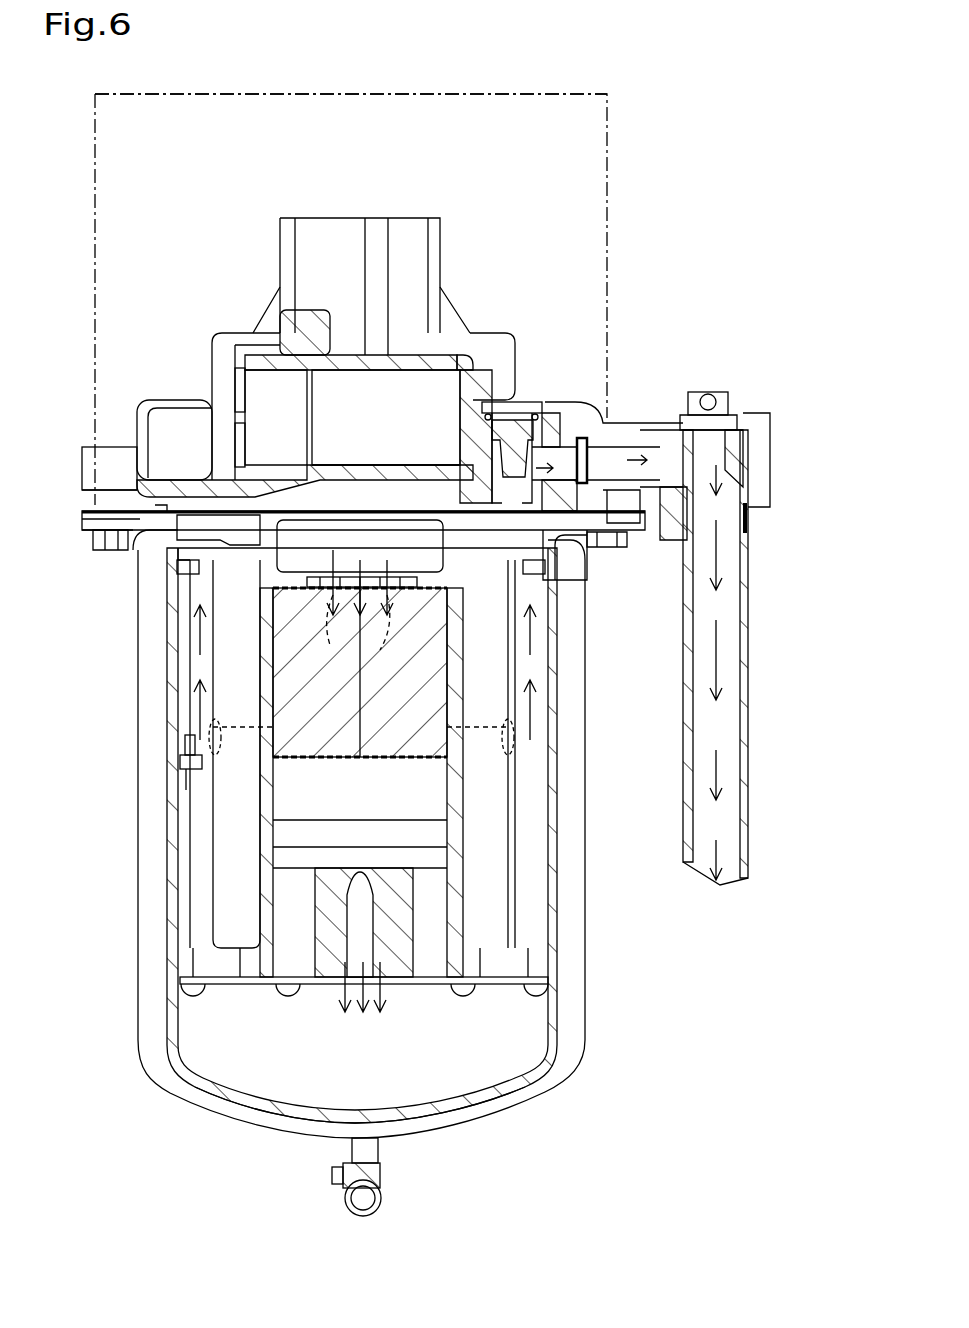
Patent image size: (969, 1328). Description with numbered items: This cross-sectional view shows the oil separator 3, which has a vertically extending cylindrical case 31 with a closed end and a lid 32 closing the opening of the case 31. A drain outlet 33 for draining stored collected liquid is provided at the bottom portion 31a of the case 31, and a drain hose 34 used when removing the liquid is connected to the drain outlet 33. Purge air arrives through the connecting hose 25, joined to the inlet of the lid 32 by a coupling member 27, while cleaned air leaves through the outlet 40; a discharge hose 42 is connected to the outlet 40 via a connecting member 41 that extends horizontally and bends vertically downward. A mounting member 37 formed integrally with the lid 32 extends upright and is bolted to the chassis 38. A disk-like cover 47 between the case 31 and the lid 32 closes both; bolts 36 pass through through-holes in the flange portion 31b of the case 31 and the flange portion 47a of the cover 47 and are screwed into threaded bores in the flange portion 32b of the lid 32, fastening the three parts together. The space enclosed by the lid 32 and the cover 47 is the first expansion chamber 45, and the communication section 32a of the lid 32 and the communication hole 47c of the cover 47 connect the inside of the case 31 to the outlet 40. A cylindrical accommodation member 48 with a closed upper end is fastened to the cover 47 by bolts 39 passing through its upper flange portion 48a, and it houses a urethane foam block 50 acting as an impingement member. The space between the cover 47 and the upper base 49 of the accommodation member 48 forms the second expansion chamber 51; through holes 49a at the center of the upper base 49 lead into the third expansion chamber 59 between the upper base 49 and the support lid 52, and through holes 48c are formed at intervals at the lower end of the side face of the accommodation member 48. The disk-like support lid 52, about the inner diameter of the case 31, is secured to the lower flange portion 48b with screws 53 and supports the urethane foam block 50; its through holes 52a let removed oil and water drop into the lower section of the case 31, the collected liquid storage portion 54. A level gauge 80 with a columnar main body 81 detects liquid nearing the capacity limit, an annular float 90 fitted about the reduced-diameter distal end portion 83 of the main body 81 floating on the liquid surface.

The oil separator 3 is at (632, 219).
The connecting hose 25 is at (745, 430).
The coupling member 27 is at (648, 420).
The case 31 is at (587, 967).
The bottom portion 31a is at (488, 1125).
The flange portion 31b is at (95, 540).
The lid 32 is at (177, 400).
The communication section 32a is at (462, 456).
The flange portion 32b is at (88, 497).
The drain outlet 33 is at (380, 1150).
The drain hose 34 is at (381, 1200).
The bolts 36 is at (100, 548).
The mounting member 37 is at (458, 304).
The chassis 38 is at (612, 289).
The bolts 39 is at (203, 572).
The outlet 40 is at (613, 430).
The connecting member 41 is at (747, 465).
The discharge hose 42 is at (683, 675).
The first expansion chamber 45 is at (437, 504).
The cover 47 is at (283, 503).
The flange portion 47a is at (95, 520).
The communication hole 47c is at (548, 565).
The accommodation member 48 is at (170, 680).
The flange portion 48a is at (165, 565).
The flange portion 48b is at (185, 960).
The through holes 48c is at (215, 737).
The upper base 49 is at (287, 563).
The through holes 49a is at (364, 627).
The urethane foam block 50 is at (285, 713).
The second expansion chamber 51 is at (415, 549).
The support lid 52 is at (265, 985).
The through holes 52a is at (345, 990).
The screws 53 is at (195, 997).
The collected liquid storage portion 54 is at (437, 1084).
The third expansion chamber 59 is at (345, 687).
The level gauge 80 is at (192, 805).
The main body 81 is at (205, 600).
The distal end portion 83 is at (200, 752).
The float 90 is at (200, 782).